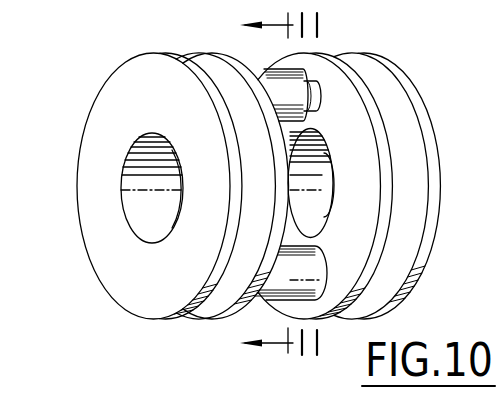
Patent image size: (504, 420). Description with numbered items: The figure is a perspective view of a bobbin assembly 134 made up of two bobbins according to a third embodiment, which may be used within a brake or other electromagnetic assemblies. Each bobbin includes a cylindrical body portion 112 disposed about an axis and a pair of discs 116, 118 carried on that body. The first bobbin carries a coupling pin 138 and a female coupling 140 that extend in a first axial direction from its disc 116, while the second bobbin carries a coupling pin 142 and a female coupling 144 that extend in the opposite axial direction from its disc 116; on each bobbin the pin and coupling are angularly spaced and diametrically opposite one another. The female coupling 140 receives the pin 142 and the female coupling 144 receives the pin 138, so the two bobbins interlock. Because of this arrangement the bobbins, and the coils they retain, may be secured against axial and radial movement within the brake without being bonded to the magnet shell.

The bobbin assembly 134 is at (110, 38).
The female coupling 140 is at (264, 68).
The coupling pin 142 is at (313, 104).
The female coupling 144 is at (311, 256).
The cylindrical body portion 112 is at (146, 150).
The disc 116 is at (337, 78).
The disc 118 is at (417, 108).
The coupling pin 138 is at (270, 296).